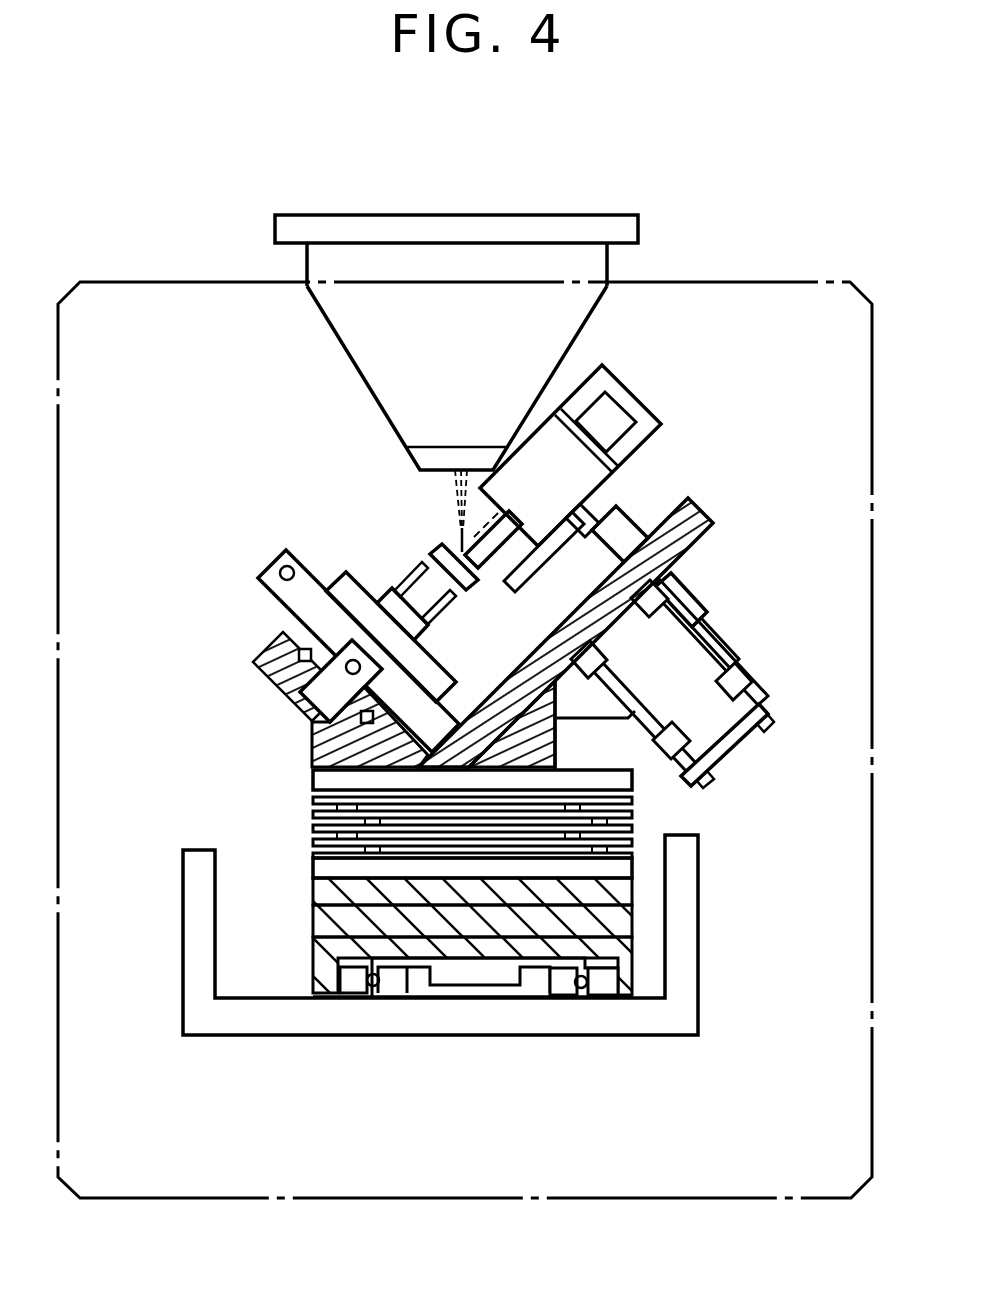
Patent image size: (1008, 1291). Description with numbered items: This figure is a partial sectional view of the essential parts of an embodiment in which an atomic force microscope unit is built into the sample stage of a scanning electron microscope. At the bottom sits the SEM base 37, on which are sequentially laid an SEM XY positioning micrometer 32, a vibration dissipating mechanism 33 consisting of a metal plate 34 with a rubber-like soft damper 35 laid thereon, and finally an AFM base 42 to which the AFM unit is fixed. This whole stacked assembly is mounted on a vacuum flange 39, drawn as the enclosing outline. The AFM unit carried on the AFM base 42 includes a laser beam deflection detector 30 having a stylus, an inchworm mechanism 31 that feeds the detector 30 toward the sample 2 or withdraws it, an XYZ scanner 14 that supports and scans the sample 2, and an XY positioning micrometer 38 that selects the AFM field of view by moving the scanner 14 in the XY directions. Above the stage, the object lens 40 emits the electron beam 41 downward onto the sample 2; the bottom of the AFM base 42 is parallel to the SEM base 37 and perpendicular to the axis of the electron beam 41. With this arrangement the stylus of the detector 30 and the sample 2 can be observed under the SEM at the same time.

The sample 2 is at (430, 548).
The XYZ scanner 14 is at (409, 583).
The laser beam deflection detector 30 is at (658, 412).
The inchworm mechanism 31 is at (712, 624).
The SEM XY positioning micrometer 32 is at (328, 924).
The vibration dissipating mechanism 33 is at (304, 767).
The metal plate 34 is at (636, 786).
The rubber-like soft damper 35 is at (567, 850).
The SEM base 37 is at (505, 1008).
The XY positioning micrometer 38 is at (256, 640).
The vacuum flange 39 is at (148, 282).
The object lens 40 is at (456, 342).
The electron beam 41 is at (432, 482).
The AFM base 42 is at (312, 742).